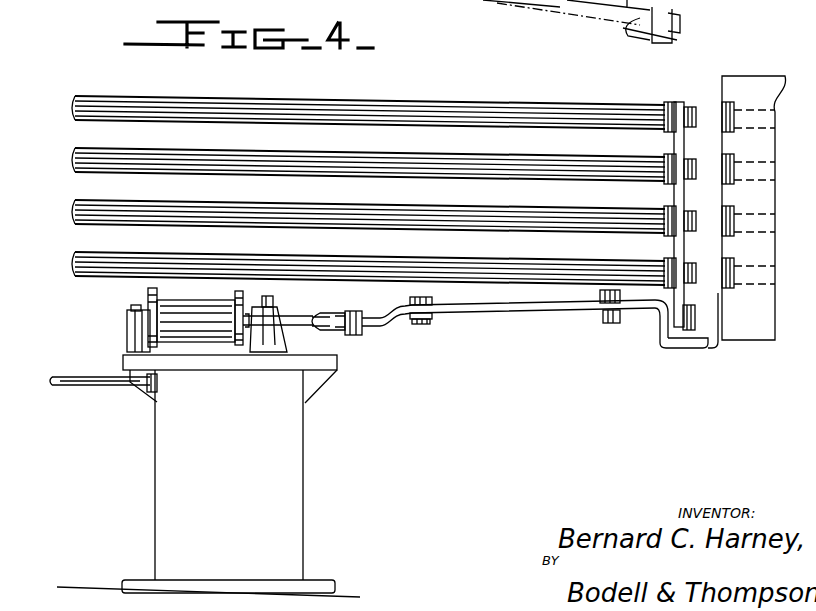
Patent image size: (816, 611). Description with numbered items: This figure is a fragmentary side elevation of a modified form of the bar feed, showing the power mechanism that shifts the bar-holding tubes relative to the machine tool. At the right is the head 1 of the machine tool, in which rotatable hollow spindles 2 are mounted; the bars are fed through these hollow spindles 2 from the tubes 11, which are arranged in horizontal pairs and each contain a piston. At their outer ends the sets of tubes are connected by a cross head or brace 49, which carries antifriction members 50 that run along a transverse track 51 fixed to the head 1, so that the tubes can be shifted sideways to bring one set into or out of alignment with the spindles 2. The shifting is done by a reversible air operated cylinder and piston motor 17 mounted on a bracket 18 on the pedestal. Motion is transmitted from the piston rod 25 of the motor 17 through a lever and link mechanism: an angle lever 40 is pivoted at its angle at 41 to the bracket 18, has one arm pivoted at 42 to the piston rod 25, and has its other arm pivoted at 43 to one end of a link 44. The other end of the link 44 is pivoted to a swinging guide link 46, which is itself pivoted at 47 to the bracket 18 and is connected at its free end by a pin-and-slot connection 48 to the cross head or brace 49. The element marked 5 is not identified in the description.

The head 1 is at (752, 78).
The hollow spindle 2 is at (757, 167).
The support bar 5 is at (707, 93).
The set of tubes 11 is at (487, 152).
The reversible air operated motor 17 is at (176, 302).
The bracket 18 is at (337, 363).
The piston rod 25 is at (252, 308).
The angle lever 40 is at (381, 326).
The pivot 41 is at (311, 317).
The pivot 42 is at (352, 335).
The pivot 43 is at (420, 324).
The link 44 is at (432, 301).
The swinging guide link 46 is at (363, 310).
The pivot 47 is at (273, 299).
The pin-and-slot connection 48 is at (613, 324).
The cross head or brace 49 is at (657, 303).
The antifriction members 50 is at (688, 306).
The transverse track 51 is at (695, 348).